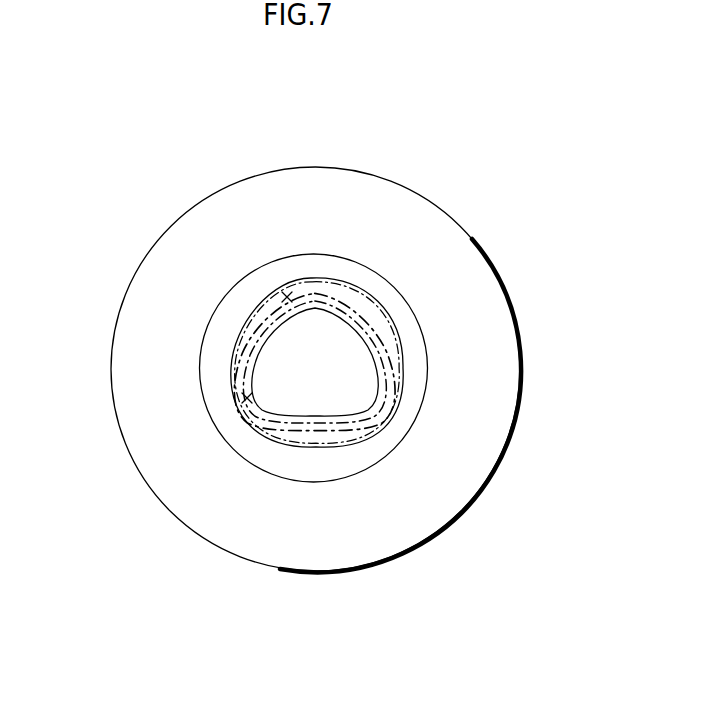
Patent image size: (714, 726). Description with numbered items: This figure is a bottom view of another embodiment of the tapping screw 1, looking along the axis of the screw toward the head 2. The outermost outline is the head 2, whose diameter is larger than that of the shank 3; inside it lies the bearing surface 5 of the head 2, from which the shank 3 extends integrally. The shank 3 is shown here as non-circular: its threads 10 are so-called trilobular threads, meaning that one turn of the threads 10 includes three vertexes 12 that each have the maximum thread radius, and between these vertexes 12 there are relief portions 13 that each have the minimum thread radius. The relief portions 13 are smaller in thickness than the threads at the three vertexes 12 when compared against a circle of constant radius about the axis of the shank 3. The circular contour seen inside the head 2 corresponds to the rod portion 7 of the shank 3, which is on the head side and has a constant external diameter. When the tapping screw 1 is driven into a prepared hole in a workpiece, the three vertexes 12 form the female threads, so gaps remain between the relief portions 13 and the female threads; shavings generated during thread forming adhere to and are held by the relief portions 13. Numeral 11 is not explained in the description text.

The tapping screw 1 is at (406, 143).
The head 2 is at (513, 312).
The shank 3 is at (325, 377).
The bearing surface 5 is at (197, 252).
The rod portion 7 is at (357, 270).
The threads 10 is at (373, 403).
The first trajectory (dash-dot line) 11 is at (238, 376).
The vertexes 12 is at (240, 417).
The relief portions 13 is at (238, 340).